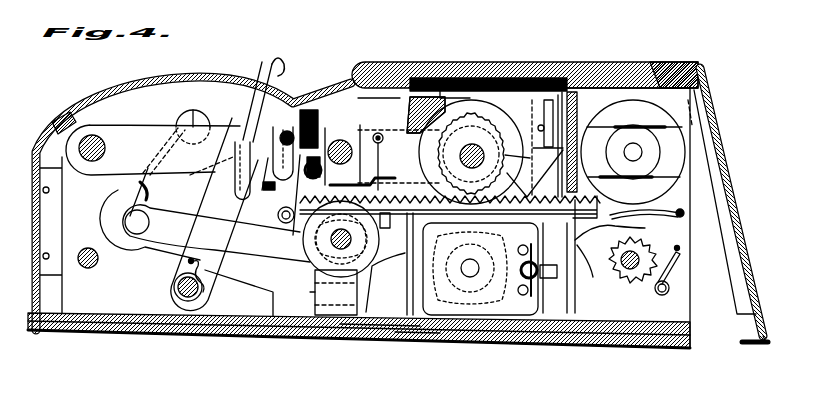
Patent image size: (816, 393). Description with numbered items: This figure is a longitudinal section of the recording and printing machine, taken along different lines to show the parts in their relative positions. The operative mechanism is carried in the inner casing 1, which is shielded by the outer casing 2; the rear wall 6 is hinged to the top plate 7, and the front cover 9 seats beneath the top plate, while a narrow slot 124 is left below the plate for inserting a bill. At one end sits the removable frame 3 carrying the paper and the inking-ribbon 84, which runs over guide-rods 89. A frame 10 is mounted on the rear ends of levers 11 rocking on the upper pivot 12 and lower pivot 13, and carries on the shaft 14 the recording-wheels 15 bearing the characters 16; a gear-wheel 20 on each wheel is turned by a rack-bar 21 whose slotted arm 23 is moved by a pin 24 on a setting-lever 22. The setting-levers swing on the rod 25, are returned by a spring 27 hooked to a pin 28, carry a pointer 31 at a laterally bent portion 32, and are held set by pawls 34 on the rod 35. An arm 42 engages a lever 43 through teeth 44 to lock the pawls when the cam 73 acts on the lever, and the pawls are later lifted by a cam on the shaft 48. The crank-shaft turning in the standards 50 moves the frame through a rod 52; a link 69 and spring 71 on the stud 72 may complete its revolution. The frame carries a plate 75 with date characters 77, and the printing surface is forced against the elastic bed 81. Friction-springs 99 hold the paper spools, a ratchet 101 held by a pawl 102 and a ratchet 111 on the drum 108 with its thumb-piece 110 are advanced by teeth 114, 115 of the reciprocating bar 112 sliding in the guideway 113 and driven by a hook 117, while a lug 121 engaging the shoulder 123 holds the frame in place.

The inner casing 1 is at (336, 334).
The outer casing 2 is at (25, 268).
The frame 3 is at (690, 318).
The rear wall 6 is at (722, 151).
The top plate 7 is at (592, 66).
The front cover 9 is at (194, 82).
The frame 10 is at (370, 125).
The levers 11 is at (118, 172).
The upper pivot 12 is at (102, 140).
The lower pivot 13 is at (88, 248).
The shaft 14 is at (460, 158).
The recording-wheels 15 is at (530, 160).
The numbers or characters 16 is at (548, 173).
The gear-wheel 20 is at (535, 172).
The rack-bar 21 is at (398, 188).
The setting-levers 22 is at (264, 70).
The slotted arm 23 is at (211, 149).
The pin 24 is at (214, 214).
The rod 25 is at (176, 286).
The spring 27 is at (208, 293).
The pin 28 is at (202, 272).
The pointer 31 is at (282, 66).
The laterally bent portion 32 is at (244, 103).
The pawls 34 is at (388, 140).
The rod 35 is at (327, 171).
The arm 42 is at (264, 163).
The lever 43 is at (284, 224).
The teeth 44 is at (341, 239).
The shaft 48 is at (312, 92).
The standards 50 is at (314, 292).
The rod 52 is at (343, 140).
The link 69 is at (160, 224).
The spring 71 is at (138, 183).
The stud 72 is at (199, 112).
The cam 73 is at (389, 264).
The plate 75 is at (545, 118).
The date characters 77 is at (577, 112).
The elastic bed 81 is at (456, 64).
The inking-ribbon 84 is at (500, 64).
The guide-rods 89 is at (534, 252).
The friction-springs 99 is at (633, 152).
The ratchet 101 is at (648, 250).
The pawl 102 is at (655, 290).
The drum 108 is at (495, 270).
The thumb-piece 110 is at (680, 209).
The ratchet 111 is at (452, 282).
The reciprocating bar 112 is at (450, 216).
The guideway 113 is at (621, 265).
The tooth 114 is at (627, 256).
The tooth 115 is at (626, 247).
The hook 117 is at (338, 292).
The lug 121 is at (413, 340).
The hook or shoulder 123 is at (382, 340).
The slot 124 is at (400, 63).